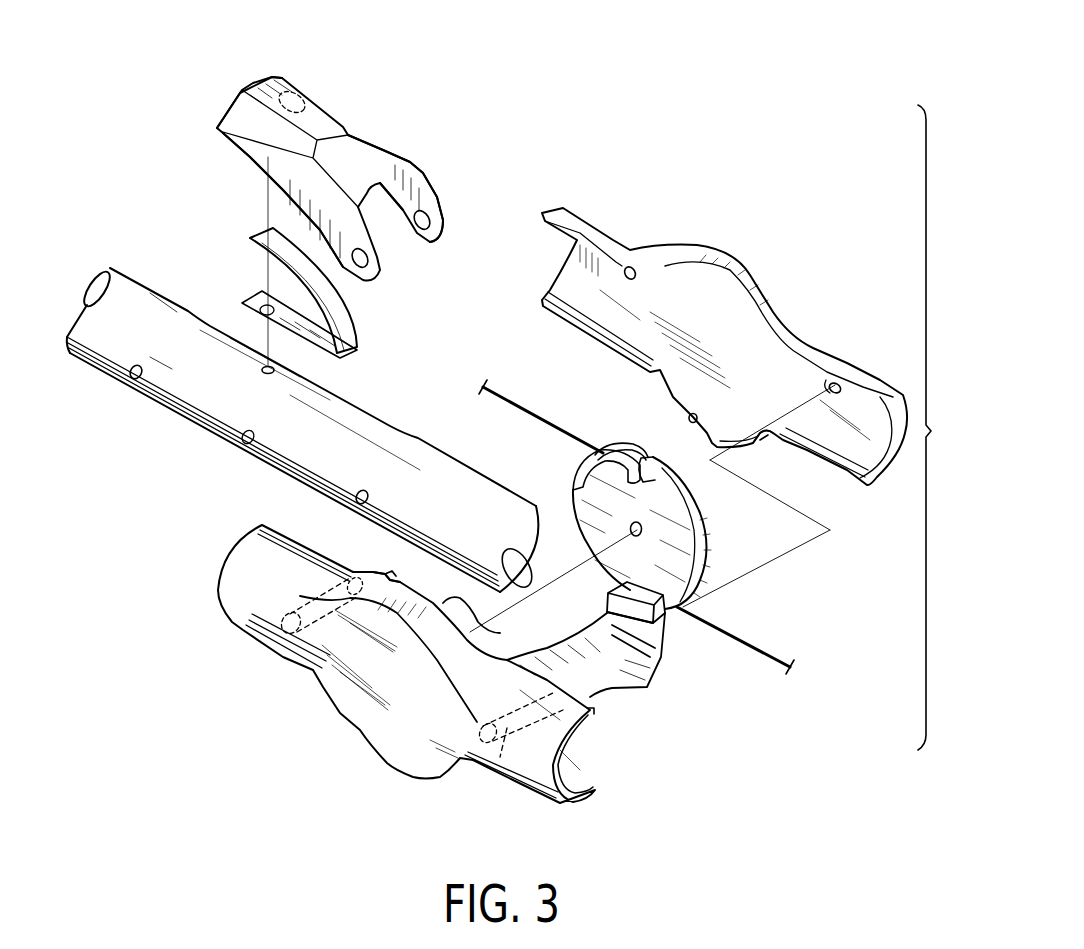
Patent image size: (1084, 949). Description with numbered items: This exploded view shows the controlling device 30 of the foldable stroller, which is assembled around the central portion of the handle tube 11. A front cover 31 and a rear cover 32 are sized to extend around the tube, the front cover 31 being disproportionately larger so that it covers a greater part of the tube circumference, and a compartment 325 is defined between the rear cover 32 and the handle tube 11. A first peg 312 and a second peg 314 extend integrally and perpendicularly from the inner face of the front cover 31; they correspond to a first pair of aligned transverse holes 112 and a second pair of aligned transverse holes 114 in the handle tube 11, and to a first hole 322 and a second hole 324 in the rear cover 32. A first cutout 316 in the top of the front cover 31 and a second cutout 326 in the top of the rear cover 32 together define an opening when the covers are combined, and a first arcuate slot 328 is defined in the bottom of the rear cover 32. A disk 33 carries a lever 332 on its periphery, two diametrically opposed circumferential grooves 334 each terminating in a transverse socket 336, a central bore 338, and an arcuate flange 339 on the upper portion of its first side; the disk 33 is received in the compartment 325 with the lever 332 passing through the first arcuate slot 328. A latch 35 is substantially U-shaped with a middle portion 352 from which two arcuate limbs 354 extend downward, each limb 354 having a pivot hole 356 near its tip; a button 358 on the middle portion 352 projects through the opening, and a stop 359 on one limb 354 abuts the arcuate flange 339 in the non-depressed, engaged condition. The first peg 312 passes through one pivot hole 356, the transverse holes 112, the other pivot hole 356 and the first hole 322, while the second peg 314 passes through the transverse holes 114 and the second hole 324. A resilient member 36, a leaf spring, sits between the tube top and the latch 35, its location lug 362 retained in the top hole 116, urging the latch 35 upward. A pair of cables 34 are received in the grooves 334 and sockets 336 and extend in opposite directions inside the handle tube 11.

The handle tube 11 is at (220, 422).
The first pair of aligned transverse holes 112 is at (353, 507).
The second pair of aligned transverse holes 114 is at (137, 383).
The top hole 116 is at (280, 370).
The controlling device 30 is at (940, 427).
The front cover 31 is at (400, 757).
The first peg 312 is at (497, 770).
The second peg 314 is at (288, 663).
The first cutout 316 is at (480, 620).
The rear cover 32 is at (751, 232).
The first hole 322 is at (833, 377).
The second hole 324 is at (620, 263).
The compartment 325 is at (767, 397).
The second cutout 326 is at (733, 310).
The first arcuate slot 328 is at (697, 415).
The disk 33 is at (600, 428).
The lever 332 is at (632, 673).
The circumferential grooves 334 is at (607, 443).
The transverse socket 336 is at (665, 478).
The central bore 338 is at (645, 533).
The arcuate flange 339 is at (580, 473).
The cables 34 is at (502, 390).
The latch 35 is at (411, 62).
The middle portion 352 is at (382, 152).
The arcuate limbs 354 is at (292, 183).
The pivot hole 356 is at (437, 220).
The button 358 is at (250, 82).
The stop 359 is at (300, 100).
The resilient member 36 is at (350, 312).
The location lug 362 is at (265, 322).